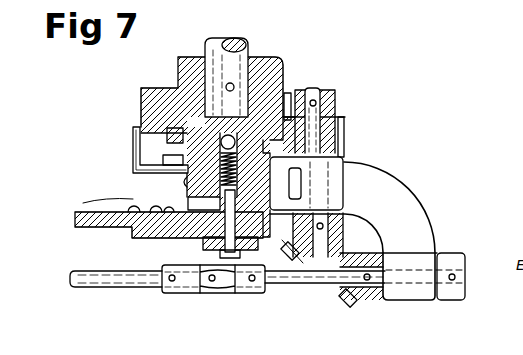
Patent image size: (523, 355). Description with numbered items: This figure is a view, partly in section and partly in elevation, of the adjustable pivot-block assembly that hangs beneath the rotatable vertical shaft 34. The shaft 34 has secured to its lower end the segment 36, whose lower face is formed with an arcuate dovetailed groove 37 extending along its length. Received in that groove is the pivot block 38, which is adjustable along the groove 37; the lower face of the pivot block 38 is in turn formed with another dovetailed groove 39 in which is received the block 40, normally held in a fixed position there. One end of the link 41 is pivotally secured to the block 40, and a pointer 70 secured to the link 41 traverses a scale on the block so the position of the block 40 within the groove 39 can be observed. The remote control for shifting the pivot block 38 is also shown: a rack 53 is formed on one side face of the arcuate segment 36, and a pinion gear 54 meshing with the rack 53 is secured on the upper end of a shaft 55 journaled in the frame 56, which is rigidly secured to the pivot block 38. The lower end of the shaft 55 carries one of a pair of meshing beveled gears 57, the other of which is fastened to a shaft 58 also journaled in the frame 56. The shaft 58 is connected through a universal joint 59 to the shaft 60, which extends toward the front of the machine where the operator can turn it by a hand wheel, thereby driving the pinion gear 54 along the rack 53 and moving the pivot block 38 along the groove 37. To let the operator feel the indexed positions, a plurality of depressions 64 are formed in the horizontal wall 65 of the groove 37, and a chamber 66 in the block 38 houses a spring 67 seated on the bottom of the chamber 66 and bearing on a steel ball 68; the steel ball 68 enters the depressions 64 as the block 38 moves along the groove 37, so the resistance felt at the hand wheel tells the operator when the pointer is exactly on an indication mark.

The rotatable vertical shaft 34 is at (219, 45).
The segment 36 is at (140, 95).
The arcuate dovetailed groove 37 is at (340, 118).
The pivot block 38 is at (221, 139).
The dovetailed groove 39 is at (190, 201).
The block 40 is at (210, 227).
The link 41 is at (75, 216).
The rack 53 is at (296, 117).
The pinion gear 54 is at (344, 132).
The shaft 55 is at (321, 179).
The frame 56 is at (408, 200).
The beveled gears 57 is at (347, 303).
The shaft 58 is at (326, 281).
The universal joint 59 is at (188, 282).
The shaft 60 is at (133, 275).
The depressions 64 is at (287, 117).
The horizontal wall 65 is at (326, 92).
The chamber 66 is at (192, 153).
The spring 67 is at (184, 182).
The steel ball 68 is at (207, 115).
The pointer 70 is at (91, 205).